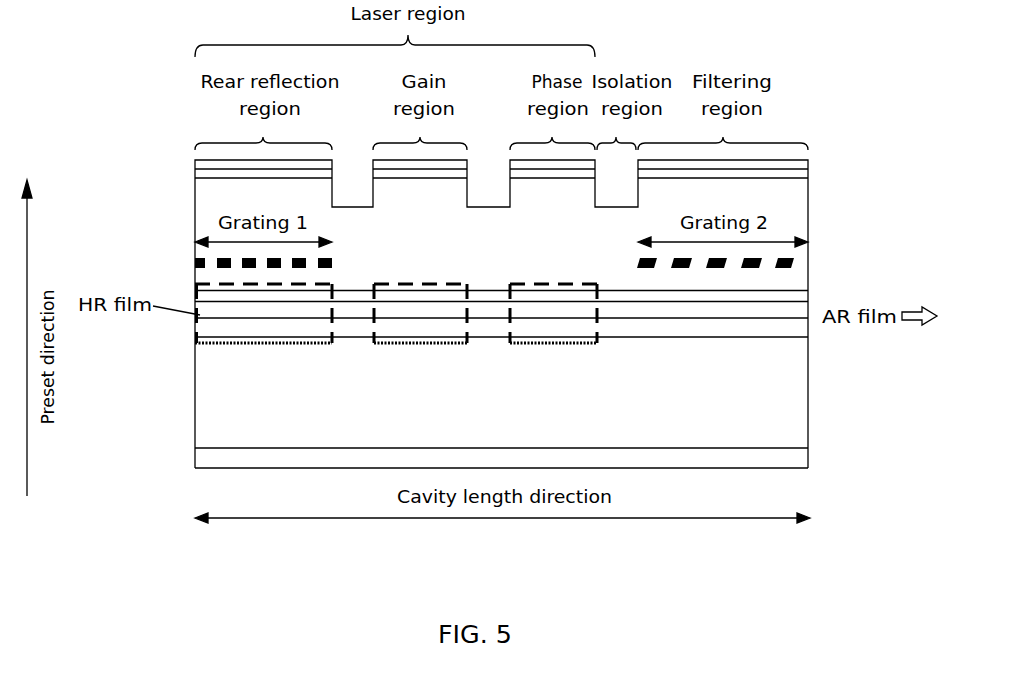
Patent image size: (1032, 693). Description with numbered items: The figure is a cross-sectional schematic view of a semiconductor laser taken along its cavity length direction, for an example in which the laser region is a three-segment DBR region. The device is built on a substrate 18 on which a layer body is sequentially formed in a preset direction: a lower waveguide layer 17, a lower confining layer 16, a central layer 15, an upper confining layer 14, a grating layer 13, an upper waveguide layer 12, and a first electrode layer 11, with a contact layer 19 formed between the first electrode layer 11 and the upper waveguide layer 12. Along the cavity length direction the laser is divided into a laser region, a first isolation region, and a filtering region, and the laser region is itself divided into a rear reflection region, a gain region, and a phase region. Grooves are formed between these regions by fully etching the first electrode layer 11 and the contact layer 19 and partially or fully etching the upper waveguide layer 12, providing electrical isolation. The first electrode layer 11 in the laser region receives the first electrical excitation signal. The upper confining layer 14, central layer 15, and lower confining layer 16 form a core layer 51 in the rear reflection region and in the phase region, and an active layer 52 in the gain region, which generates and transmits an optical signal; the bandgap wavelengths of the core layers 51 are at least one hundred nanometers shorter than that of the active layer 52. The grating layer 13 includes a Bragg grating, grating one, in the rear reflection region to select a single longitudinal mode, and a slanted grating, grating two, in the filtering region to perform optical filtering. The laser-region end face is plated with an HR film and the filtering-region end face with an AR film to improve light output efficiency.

The first electrode layer 11 is at (195, 163).
The contact layer 19 is at (195, 173).
The upper waveguide layer 12 is at (200, 215).
The grating layer 13 is at (195, 260).
The upper confining layer 14 is at (198, 294).
The central layer 15 is at (200, 314).
The lower confining layer 16 is at (198, 330).
The lower waveguide layer 17 is at (210, 390).
The substrate 18 is at (207, 462).
The core layer 51 is at (260, 343).
The active layer 52 is at (427, 357).